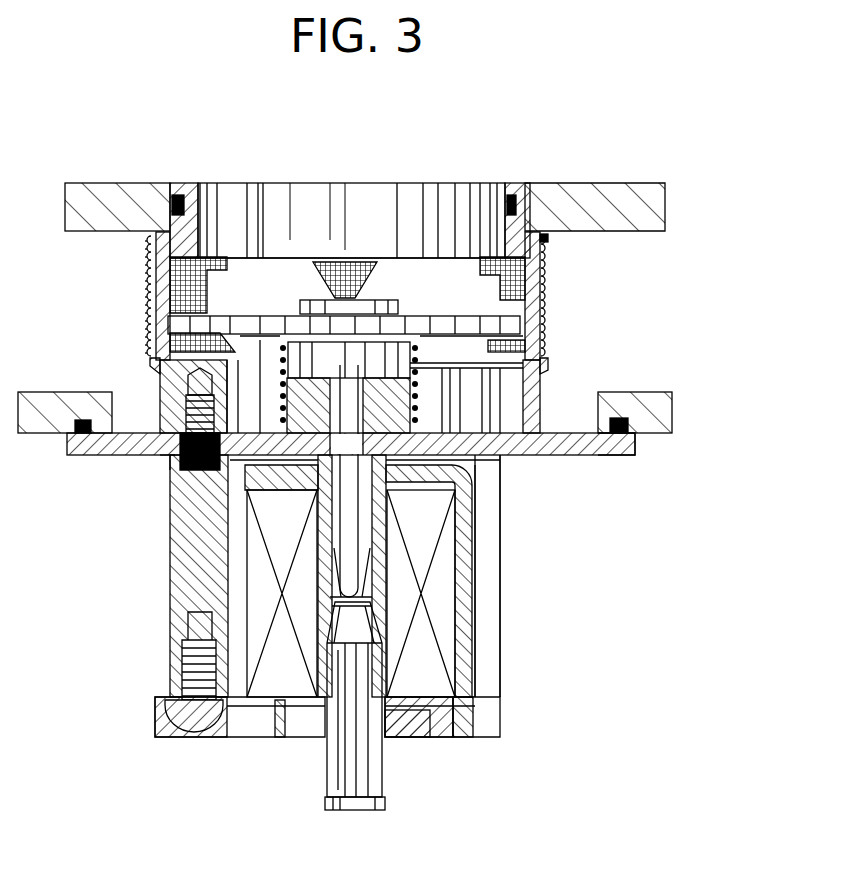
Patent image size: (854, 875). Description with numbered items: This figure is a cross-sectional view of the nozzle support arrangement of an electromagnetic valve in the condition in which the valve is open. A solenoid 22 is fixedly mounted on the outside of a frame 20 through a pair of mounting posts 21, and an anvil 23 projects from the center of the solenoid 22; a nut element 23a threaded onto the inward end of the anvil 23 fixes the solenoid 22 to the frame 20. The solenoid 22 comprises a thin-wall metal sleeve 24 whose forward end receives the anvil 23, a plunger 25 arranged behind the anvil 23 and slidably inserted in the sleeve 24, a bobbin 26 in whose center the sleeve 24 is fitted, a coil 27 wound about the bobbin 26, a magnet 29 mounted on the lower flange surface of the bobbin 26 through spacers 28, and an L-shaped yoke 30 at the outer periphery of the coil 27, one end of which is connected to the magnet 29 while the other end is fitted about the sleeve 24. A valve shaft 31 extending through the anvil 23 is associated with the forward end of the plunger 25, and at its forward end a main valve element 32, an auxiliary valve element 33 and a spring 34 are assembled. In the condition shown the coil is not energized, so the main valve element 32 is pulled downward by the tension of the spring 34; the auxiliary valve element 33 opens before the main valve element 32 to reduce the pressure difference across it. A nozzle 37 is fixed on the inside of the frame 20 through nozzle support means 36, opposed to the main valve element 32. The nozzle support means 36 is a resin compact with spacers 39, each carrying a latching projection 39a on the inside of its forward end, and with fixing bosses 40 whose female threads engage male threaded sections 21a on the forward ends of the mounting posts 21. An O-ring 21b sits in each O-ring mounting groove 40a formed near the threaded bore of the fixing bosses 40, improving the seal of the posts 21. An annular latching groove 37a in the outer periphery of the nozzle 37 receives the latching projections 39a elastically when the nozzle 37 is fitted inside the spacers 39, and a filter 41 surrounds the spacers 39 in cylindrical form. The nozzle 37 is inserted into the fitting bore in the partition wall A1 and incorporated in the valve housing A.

The valve housing A is at (653, 393).
The partition wall A1 is at (591, 192).
The frame 20 is at (622, 445).
The mounting posts 21 is at (186, 552).
The male threaded sections 21a is at (175, 468).
The O-ring 21b is at (166, 446).
The solenoid 22 is at (482, 592).
The anvil 23 is at (458, 462).
The nut element 23a is at (528, 392).
The thin-wall metal sleeve 24 is at (384, 778).
The plunger 25 is at (345, 736).
The bobbin 26 is at (506, 703).
The coil 27 is at (427, 670).
The spacers 28 is at (433, 738).
The magnet 29 is at (455, 737).
The L-shaped yoke 30 is at (468, 528).
The valve shaft 31 is at (347, 528).
The main valve element 32 is at (260, 316).
The auxiliary valve element 33 is at (290, 356).
The spring 34 is at (420, 345).
The nozzle support means 36 is at (150, 346).
The nozzle 37 is at (502, 183).
The annular latching groove 37a is at (519, 232).
The spacers 39 is at (152, 302).
The latching projection 39a is at (170, 200).
The fixing bosses 40 is at (155, 374).
The O-ring mounting groove 40a is at (192, 394).
The filter 41 is at (148, 272).